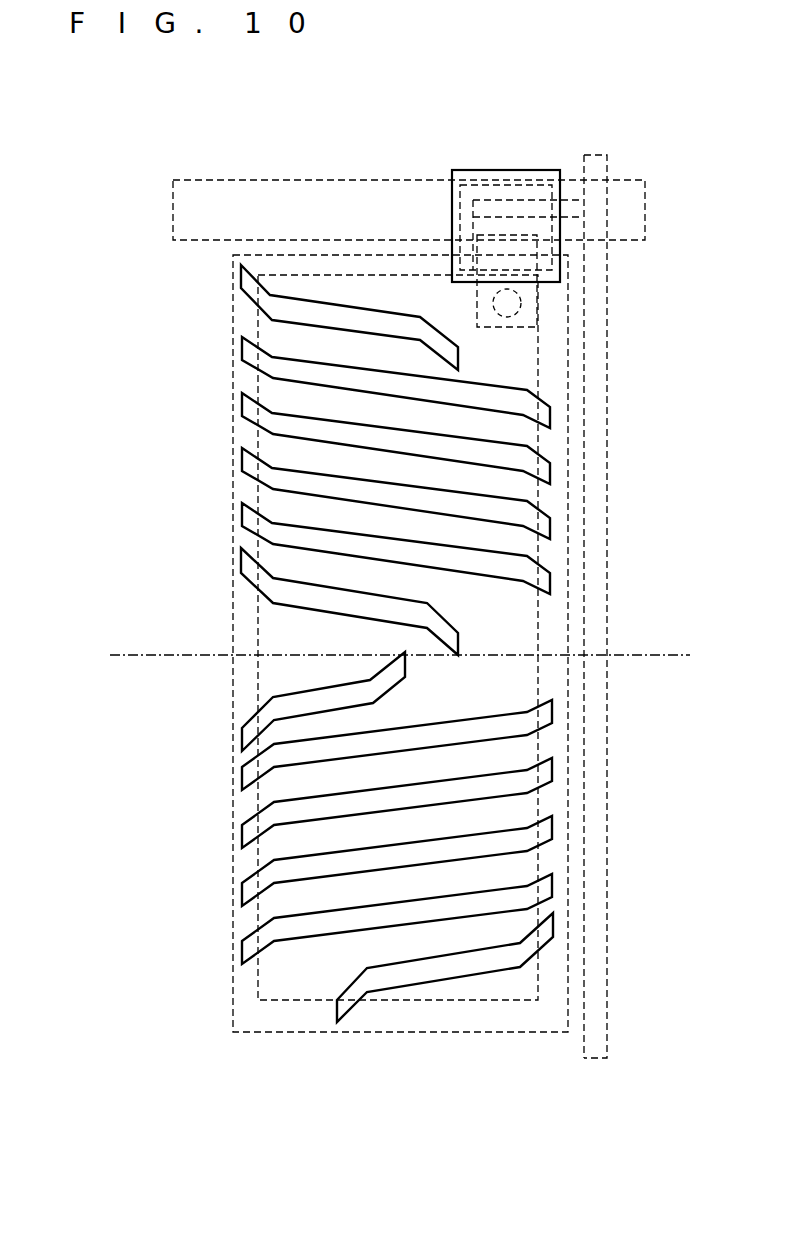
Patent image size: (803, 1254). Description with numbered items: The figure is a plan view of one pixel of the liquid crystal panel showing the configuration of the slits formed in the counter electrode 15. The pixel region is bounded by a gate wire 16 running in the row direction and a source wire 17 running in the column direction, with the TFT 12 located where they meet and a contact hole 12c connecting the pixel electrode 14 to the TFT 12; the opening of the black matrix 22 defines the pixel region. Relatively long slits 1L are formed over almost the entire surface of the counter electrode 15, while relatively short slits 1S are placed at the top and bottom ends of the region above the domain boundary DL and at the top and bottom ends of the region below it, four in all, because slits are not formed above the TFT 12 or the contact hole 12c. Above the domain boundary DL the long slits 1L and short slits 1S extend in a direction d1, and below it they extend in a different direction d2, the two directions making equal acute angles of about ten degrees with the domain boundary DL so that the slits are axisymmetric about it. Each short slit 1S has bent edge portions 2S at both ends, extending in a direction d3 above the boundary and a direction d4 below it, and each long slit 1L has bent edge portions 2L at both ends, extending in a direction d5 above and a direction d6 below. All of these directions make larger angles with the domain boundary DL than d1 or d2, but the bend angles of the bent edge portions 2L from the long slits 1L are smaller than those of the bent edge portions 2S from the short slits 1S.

The gate wire 16 is at (300, 180).
The TFT 12 is at (463, 186).
The contact hole 12c is at (520, 303).
The counter electrode 15 is at (508, 615).
The black matrix 22 is at (540, 986).
The source wire 17 is at (607, 438).
The pixel electrode 14 is at (584, 950).
The domain boundary DL is at (413, 657).
The bent edge portion 2S is at (243, 287).
The bent edge portion 2L is at (243, 352).
The short slit 1S is at (296, 307).
The long slit 1L is at (296, 374).
The direction d1 is at (315, 288).
The direction d2 is at (361, 674).
The extending direction d3 is at (252, 265).
The extending direction d4 is at (392, 647).
The extending direction d5 is at (252, 328).
The extending direction d6 is at (260, 748).